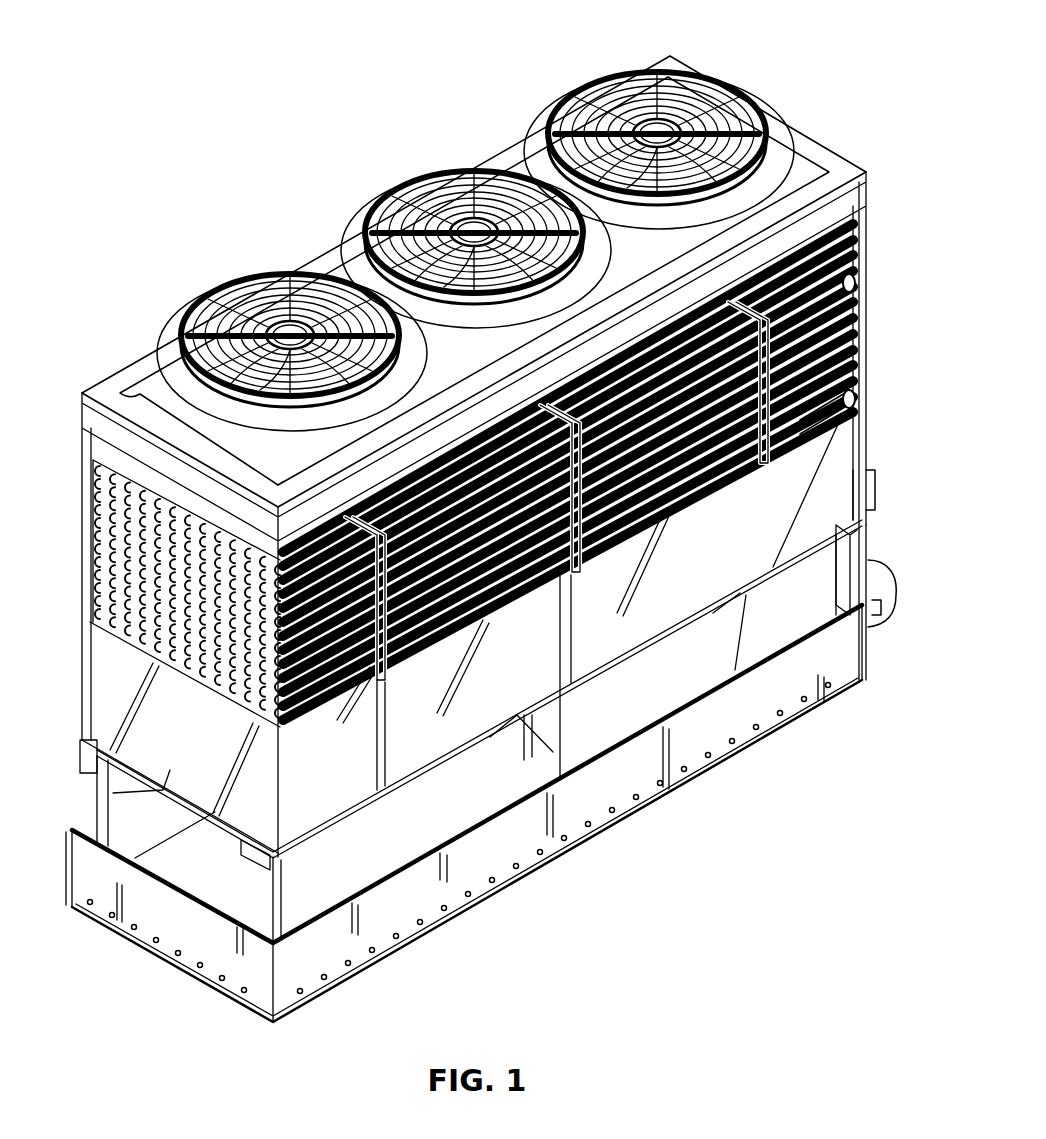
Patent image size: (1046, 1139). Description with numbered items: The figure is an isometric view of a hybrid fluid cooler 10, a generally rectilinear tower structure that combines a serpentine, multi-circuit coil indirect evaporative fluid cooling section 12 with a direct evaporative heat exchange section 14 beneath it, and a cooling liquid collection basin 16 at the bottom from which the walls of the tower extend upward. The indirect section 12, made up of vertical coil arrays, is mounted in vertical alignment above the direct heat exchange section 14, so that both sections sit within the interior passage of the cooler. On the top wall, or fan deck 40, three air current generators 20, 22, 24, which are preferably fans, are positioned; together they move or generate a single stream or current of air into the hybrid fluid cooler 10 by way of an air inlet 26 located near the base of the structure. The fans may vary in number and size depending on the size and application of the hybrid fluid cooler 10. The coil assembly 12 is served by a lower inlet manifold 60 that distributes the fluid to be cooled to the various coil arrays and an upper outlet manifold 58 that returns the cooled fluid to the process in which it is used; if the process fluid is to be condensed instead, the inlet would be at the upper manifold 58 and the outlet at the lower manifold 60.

The hybrid fluid cooler 10 is at (125, 190).
The indirect evaporative fluid cooling section 12 is at (867, 333).
The direct evaporative heat exchange section 14 is at (867, 447).
The cooling liquid collection basin 16 is at (678, 689).
The air current generator 20 is at (592, 83).
The air current generator 22 is at (410, 181).
The air current generator 24 is at (227, 292).
The air inlet 26 is at (500, 778).
The fan deck 40 is at (135, 362).
The upper outlet manifold 58 is at (856, 281).
The lower inlet manifold 60 is at (855, 398).